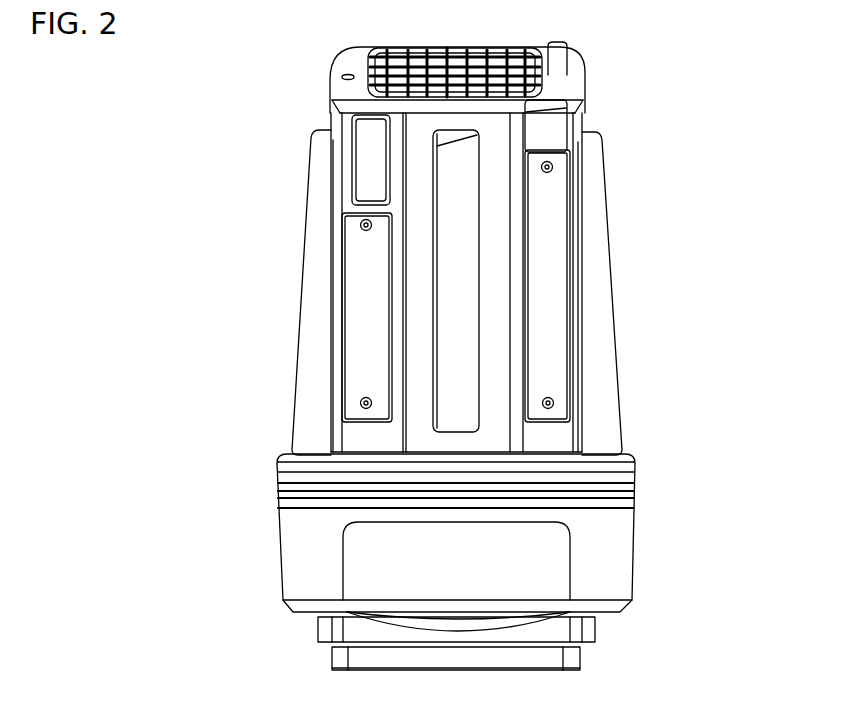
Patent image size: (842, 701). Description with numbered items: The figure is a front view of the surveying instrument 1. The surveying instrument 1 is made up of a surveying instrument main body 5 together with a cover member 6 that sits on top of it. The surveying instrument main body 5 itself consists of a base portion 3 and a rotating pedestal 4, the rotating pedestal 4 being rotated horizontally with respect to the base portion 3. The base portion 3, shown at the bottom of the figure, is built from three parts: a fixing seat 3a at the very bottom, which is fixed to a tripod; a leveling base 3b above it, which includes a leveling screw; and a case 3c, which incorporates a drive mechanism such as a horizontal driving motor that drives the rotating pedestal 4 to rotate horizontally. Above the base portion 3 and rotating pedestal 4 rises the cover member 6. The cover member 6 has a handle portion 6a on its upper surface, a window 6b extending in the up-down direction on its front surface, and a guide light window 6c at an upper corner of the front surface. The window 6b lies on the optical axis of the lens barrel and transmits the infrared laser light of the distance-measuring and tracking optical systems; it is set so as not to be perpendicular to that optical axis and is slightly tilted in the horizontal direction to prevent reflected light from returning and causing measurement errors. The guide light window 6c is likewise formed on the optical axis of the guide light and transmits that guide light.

The surveying instrument 1 is at (247, 61).
The base portion 3 is at (635, 540).
The fixing seat 3a is at (348, 657).
The leveling base 3b is at (587, 651).
The case 3c is at (305, 550).
The rotating pedestal 4 is at (636, 490).
The surveying instrument main body 5 is at (757, 463).
The cover member 6 is at (611, 336).
The handle portion 6a is at (553, 86).
The window 6b is at (466, 245).
The guide light window 6c is at (375, 182).